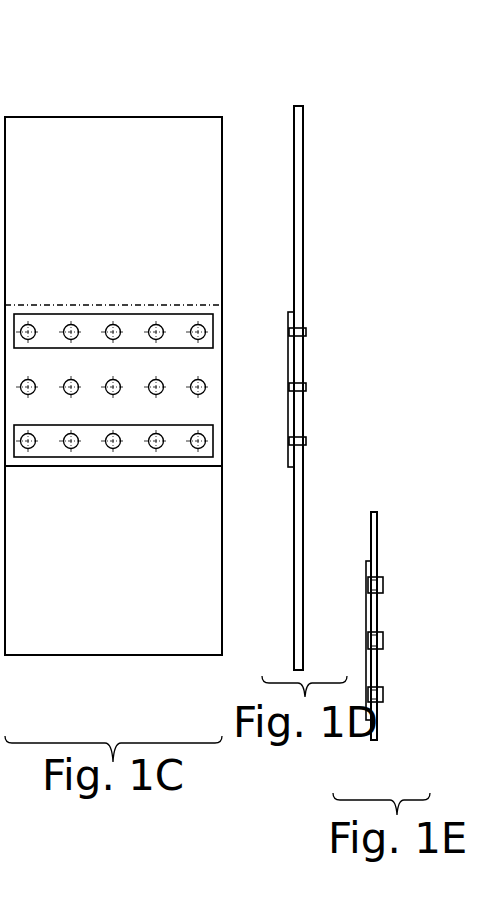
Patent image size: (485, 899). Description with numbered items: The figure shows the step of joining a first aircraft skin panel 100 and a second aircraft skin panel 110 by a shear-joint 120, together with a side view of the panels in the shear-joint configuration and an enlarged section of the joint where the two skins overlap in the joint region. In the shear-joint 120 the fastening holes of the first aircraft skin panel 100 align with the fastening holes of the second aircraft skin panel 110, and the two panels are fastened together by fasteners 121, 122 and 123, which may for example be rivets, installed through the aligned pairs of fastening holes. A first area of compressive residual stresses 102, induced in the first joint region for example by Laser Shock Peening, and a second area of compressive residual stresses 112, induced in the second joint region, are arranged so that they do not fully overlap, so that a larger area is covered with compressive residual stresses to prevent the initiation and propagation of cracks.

In FIG. 1C, the first aircraft skin panel 100 is at (134, 386).
In FIG. 1D, the first aircraft skin panel 100 is at (323, 388).
In FIG. 1C, the first area of compressive residual stresses 102 is at (128, 460).
In FIG. 1C, the second aircraft skin panel 110 is at (134, 125).
In FIG. 1D, the second aircraft skin panel 110 is at (303, 146).
In FIG. 1E, the second aircraft skin panel 110 is at (374, 626).
In FIG. 1C, the second area of compressive residual stresses 112 is at (137, 320).
In FIG. 1C, the shear-joint 120 is at (228, 379).
In FIG. 1D, the shear-joint 120 is at (291, 389).
In FIG. 1E, the shear-joint 120 is at (384, 713).
In FIG. 1C, the fastener 121 is at (29, 446).
In FIG. 1D, the fastener 121 is at (306, 441).
In FIG. 1E, the fastener 121 is at (383, 695).
In FIG. 1C, the fastener 122 is at (30, 388).
In FIG. 1D, the fastener 122 is at (306, 387).
In FIG. 1E, the fastener 122 is at (383, 641).
In FIG. 1C, the fastener 123 is at (30, 327).
In FIG. 1D, the fastener 123 is at (306, 332).
In FIG. 1E, the fastener 123 is at (383, 585).